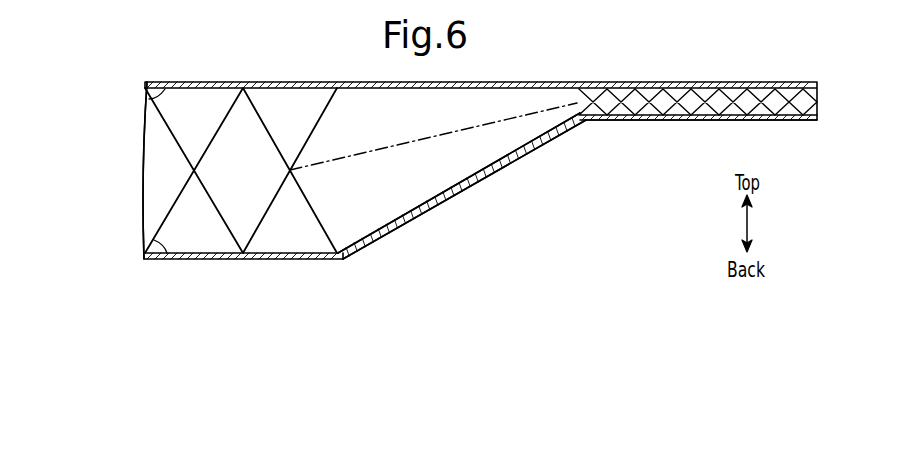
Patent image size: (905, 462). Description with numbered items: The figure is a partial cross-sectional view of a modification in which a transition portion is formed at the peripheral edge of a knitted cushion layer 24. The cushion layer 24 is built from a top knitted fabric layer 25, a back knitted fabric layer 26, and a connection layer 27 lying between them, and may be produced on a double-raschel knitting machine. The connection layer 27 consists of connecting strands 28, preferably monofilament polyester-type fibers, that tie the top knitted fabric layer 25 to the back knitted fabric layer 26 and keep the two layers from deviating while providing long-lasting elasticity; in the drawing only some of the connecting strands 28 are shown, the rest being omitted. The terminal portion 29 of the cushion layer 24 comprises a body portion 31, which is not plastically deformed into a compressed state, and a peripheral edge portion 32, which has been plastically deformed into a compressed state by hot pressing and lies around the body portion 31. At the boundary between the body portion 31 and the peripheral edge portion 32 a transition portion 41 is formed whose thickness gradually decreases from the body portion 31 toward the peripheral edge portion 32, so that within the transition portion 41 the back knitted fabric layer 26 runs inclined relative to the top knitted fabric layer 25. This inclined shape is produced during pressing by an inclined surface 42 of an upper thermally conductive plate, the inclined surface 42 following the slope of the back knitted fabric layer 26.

The cushion layer 24 is at (84, 120).
The top knitted fabric layer 25 is at (146, 101).
The back knitted fabric layer 26 is at (146, 240).
The connection layer 27 is at (155, 171).
The connecting strands 28 is at (267, 128).
The terminal portion 29 is at (432, 259).
The body portion 31 is at (290, 260).
The peripheral edge portion 32 is at (678, 121).
The transition portion 41 is at (476, 181).
The inclined surface 42 is at (462, 186).